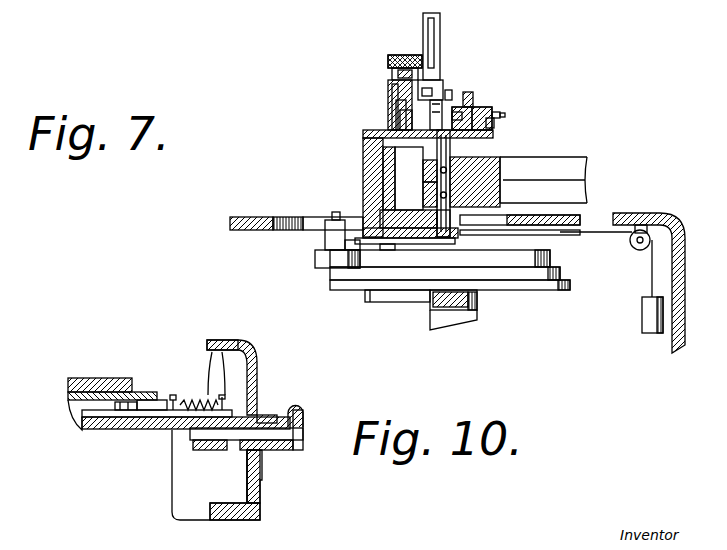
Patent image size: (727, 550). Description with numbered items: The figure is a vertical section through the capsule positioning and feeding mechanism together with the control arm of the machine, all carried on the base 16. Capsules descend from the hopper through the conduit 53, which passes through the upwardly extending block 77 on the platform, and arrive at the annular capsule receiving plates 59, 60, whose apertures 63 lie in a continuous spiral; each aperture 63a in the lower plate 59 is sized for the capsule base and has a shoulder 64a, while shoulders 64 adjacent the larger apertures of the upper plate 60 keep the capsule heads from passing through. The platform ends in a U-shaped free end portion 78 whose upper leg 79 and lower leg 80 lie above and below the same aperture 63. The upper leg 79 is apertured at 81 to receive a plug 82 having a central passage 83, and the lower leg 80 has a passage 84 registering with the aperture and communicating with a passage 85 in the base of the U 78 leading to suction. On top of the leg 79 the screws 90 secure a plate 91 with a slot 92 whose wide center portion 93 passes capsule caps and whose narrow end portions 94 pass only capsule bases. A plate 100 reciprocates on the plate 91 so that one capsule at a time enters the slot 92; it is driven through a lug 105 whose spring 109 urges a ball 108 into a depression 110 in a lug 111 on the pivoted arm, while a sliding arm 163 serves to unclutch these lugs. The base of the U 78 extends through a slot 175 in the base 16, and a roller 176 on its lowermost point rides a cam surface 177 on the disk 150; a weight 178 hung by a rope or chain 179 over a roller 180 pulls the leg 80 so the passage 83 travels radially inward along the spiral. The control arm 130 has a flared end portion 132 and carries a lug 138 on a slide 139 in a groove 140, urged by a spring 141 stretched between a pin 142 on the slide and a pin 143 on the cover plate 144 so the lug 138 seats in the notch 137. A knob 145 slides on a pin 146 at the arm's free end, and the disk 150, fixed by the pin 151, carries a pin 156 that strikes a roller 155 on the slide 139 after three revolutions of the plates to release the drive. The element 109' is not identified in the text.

In FIG. 7, the base 16 is at (640, 213).
In FIG. 10, the base 16 is at (260, 493).
In FIG. 7, the tube or conduit 53 is at (440, 27).
In FIG. 7, the lower capsule receiving plate 59 is at (540, 182).
In FIG. 7, the upper capsule receiving plate 60 is at (513, 160).
In FIG. 7, the apertures 63 is at (385, 178).
In FIG. 7, the aperture in the lower plate 63a is at (440, 170).
In FIG. 7, the shoulders 64 is at (487, 157).
In FIG. 7, the shoulder in the lower aperture 64a is at (437, 205).
In FIG. 7, the upwardly extending block 77 is at (443, 88).
In FIG. 7, the U-shaped free end portion 78 is at (367, 193).
In FIG. 7, the upper leg 79 is at (393, 117).
In FIG. 7, the lower leg 80 is at (418, 245).
In FIG. 7, the aperture in upper leg 81 is at (497, 127).
In FIG. 7, the plug 82 is at (503, 113).
In FIG. 7, the passage 83 is at (473, 100).
In FIG. 7, the passage in lower leg 84 is at (432, 237).
In FIG. 7, the passage in base of U 85 is at (367, 222).
In FIG. 7, the screws 90 is at (377, 131).
In FIG. 7, the plate 91 is at (390, 123).
In FIG. 7, the slot 92 is at (475, 107).
In FIG. 7, the center portion of slot 93 is at (483, 110).
In FIG. 7, the end portions of slot 94 is at (452, 100).
In FIG. 7, the reciprocating plate 100 is at (505, 97).
In FIG. 7, the lug 105 is at (390, 100).
In FIG. 7, the ball 108 is at (388, 85).
In FIG. 7, the spring 109 is at (353, 96).
In FIG. 7, the cylinder 109' is at (461, 77).
In FIG. 7, the depression 110 is at (407, 55).
In FIG. 7, the lug 111 is at (385, 78).
In FIG. 7, the arm 130 is at (473, 300).
In FIG. 10, the arm 130 is at (153, 427).
In FIG. 7, the flared end portion 132 is at (368, 295).
In FIG. 10, the notch 137 is at (258, 427).
In FIG. 10, the lug 138 is at (250, 363).
In FIG. 10, the slide 139 is at (187, 428).
In FIG. 10, the groove 140 is at (92, 430).
In FIG. 10, the spring 141 is at (193, 397).
In FIG. 10, the pin 142 is at (170, 397).
In FIG. 10, the pin 143 is at (208, 343).
In FIG. 10, the cover plate 144 is at (195, 453).
In FIG. 10, the knob 145 is at (303, 413).
In FIG. 10, the pin 146 is at (262, 418).
In FIG. 7, the disk 150 is at (560, 277).
In FIG. 10, the pin 151 is at (135, 410).
In FIG. 10, the roller 155 is at (80, 410).
In FIG. 10, the pin 156 is at (145, 412).
In FIG. 7, the arm 163 is at (373, 253).
In FIG. 7, the slot 175 is at (280, 217).
In FIG. 7, the roller 176 is at (323, 258).
In FIG. 7, the cam surface 177 is at (360, 262).
In FIG. 7, the weight 178 is at (645, 313).
In FIG. 7, the rope or chain 179 is at (582, 222).
In FIG. 7, the roller 180 is at (637, 250).